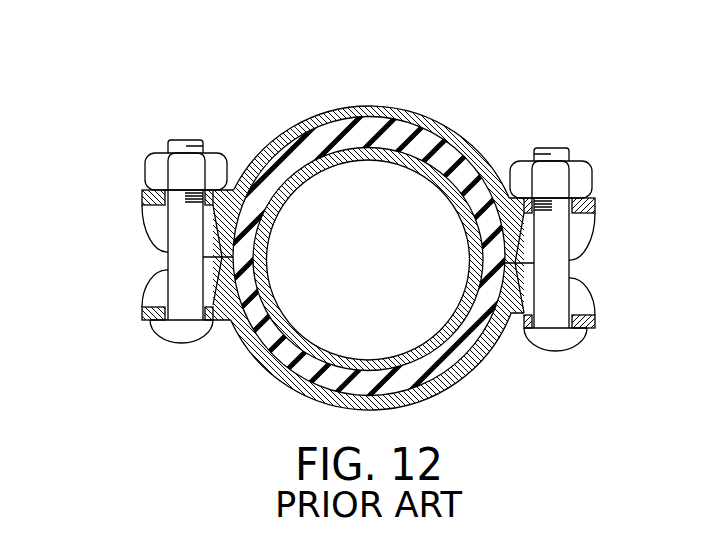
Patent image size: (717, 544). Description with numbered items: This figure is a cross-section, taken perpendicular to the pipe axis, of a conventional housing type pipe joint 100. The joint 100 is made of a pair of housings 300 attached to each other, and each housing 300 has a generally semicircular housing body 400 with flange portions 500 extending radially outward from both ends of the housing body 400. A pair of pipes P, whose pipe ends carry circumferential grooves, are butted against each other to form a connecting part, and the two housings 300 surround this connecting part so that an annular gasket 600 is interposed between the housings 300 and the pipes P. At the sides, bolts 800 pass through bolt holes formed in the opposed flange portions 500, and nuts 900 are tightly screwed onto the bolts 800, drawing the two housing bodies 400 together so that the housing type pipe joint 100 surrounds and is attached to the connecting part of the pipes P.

The housing type pipe joint 100 is at (197, 97).
The housings 300 is at (314, 110).
The housing body 400 is at (423, 122).
The annular gasket 600 is at (485, 283).
The pipes P is at (453, 197).
The nuts 900 is at (155, 173).
The flange portions 500 is at (143, 198).
The bolts 800 is at (178, 267).